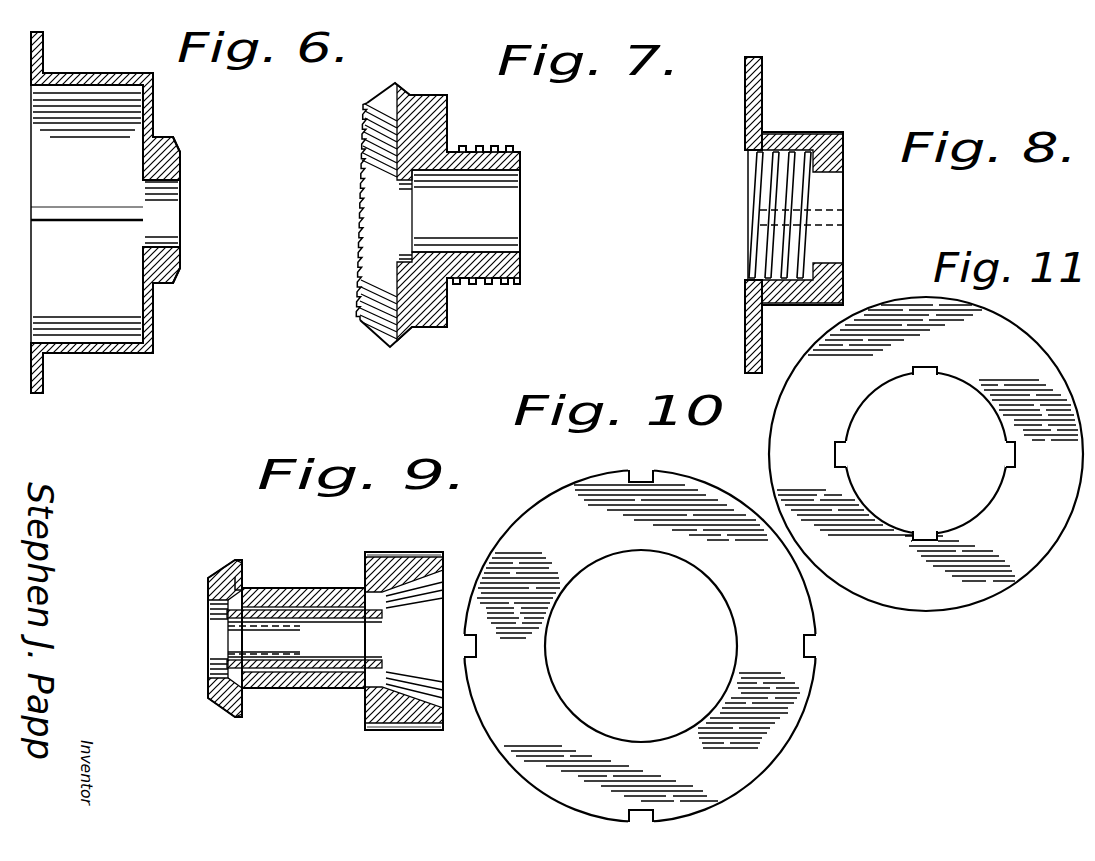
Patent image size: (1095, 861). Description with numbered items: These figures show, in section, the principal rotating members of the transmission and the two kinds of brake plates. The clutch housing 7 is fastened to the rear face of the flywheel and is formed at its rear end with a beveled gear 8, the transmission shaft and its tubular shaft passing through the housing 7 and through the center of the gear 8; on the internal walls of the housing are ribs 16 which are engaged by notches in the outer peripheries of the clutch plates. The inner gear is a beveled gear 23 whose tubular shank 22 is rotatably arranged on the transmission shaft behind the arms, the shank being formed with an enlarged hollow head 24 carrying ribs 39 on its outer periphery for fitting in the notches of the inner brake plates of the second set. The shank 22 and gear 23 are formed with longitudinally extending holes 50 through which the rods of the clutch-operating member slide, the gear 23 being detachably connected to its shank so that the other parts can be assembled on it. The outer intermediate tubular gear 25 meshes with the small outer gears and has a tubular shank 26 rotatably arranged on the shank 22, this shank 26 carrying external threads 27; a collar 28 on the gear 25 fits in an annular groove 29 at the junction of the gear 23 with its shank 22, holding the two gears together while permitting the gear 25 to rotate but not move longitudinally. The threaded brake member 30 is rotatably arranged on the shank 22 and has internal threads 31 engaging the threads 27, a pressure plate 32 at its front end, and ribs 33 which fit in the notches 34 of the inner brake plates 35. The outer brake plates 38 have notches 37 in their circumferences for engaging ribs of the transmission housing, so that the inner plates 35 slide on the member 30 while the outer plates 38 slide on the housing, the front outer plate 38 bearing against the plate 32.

In FIG. 6, the clutch housing 7 is at (91, 352).
In FIG. 6, the beveled gear 8 is at (156, 282).
In FIG. 6, the ribs 16 is at (82, 217).
In FIG. 9, the tubular shank 22 is at (308, 689).
In FIG. 9, the beveled gear 23 is at (219, 706).
In FIG. 9, the enlarged hollow head 24 is at (405, 653).
In FIG. 7, the tubular gear 25 is at (415, 235).
In FIG. 7, the tubular shank 26 is at (521, 268).
In FIG. 7, the external threads 27 is at (484, 284).
In FIG. 7, the collar 28 is at (394, 250).
In FIG. 9, the annular groove 29 is at (242, 583).
In FIG. 8, the brake member 30 is at (826, 200).
In FIG. 8, the internal threads 31 is at (748, 272).
In FIG. 8, the plate 32 is at (752, 108).
In FIG. 8, the ribs 33 is at (816, 133).
In FIG. 11, the notches 34 is at (927, 379).
In FIG. 11, the inner brake plates 35 is at (1034, 347).
In FIG. 10, the notches 37 is at (650, 470).
In FIG. 10, the outer brake plates 38 is at (667, 548).
In FIG. 9, the ribs 39 is at (411, 553).
In FIG. 9, the longitudinally extending holes 50 is at (311, 607).